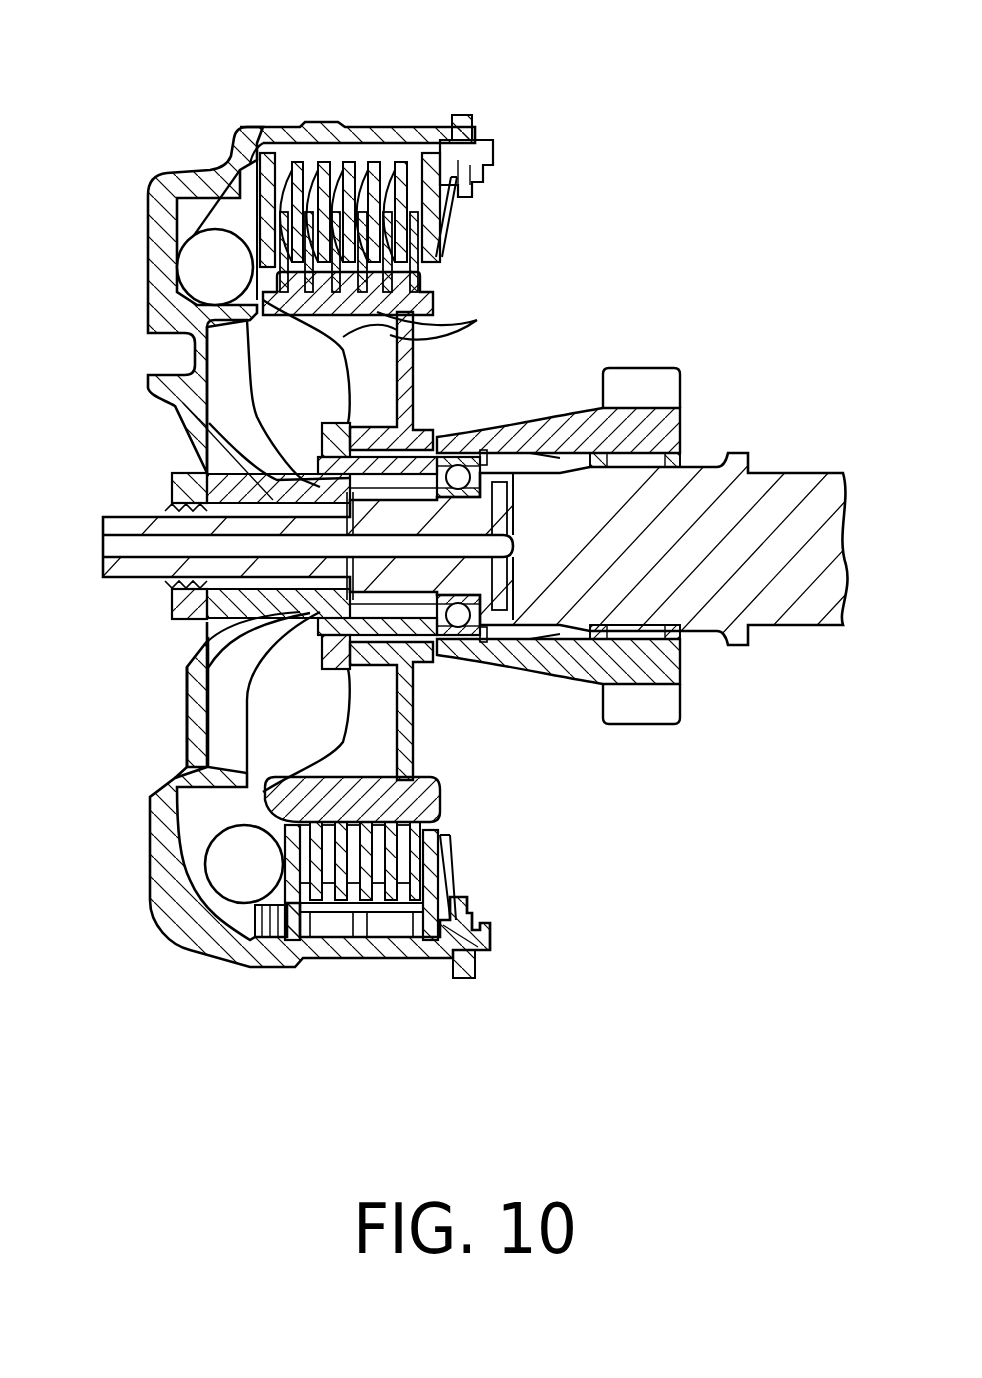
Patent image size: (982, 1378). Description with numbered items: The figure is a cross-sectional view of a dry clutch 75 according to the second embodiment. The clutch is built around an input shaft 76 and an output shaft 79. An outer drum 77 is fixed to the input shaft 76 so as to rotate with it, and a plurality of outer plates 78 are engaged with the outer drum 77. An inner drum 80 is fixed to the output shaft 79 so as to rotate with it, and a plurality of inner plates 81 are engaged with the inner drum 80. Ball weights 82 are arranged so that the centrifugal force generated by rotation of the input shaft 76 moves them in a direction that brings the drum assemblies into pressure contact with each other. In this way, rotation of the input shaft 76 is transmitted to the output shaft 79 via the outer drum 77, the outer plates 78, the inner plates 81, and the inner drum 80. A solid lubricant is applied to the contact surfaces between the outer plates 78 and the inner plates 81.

The dry clutch 75 is at (556, 116).
The input shaft 76 is at (803, 470).
The outer drum 77 is at (171, 170).
The outer plates 78 is at (400, 165).
The output shaft 79 is at (572, 423).
The inner drum 80 is at (425, 396).
The inner plates 81 is at (370, 544).
The ball weights 82 is at (197, 263).